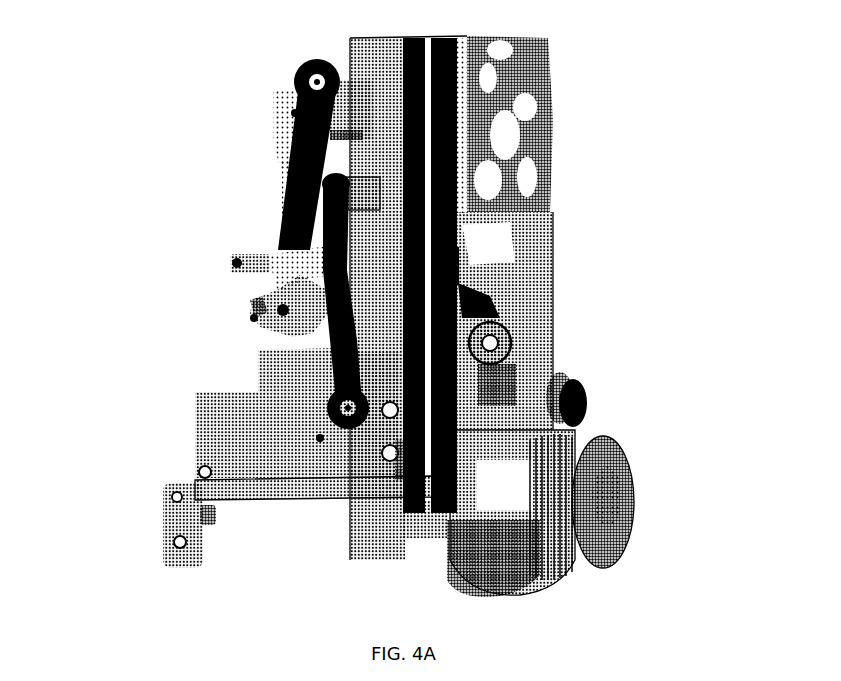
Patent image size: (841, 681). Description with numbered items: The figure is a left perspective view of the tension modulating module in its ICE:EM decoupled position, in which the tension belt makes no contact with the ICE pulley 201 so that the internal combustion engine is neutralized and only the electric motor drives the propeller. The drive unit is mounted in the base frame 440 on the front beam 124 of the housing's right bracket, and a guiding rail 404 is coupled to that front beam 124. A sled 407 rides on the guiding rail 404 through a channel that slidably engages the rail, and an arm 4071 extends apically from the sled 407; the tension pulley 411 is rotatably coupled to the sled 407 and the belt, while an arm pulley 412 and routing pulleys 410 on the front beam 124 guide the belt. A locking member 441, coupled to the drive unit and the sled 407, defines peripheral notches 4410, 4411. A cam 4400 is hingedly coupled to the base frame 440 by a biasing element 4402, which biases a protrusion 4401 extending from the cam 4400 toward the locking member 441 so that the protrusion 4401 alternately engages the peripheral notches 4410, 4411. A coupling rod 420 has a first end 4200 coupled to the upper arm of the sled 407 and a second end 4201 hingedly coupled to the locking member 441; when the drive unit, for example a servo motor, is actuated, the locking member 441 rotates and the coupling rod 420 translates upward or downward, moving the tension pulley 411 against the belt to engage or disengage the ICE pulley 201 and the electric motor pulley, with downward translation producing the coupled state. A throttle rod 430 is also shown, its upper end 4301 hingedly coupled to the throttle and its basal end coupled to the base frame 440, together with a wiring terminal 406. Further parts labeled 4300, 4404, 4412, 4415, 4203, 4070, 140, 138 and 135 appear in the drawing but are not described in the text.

The arm 4071 is at (378, 192).
The pivot cylinder 4300 is at (343, 72).
The upper end of throttle rod 4301 is at (298, 83).
The throttle rod 430 is at (290, 178).
The first end of coupling rod 4200 is at (290, 190).
The coupling rod 420 is at (287, 215).
The locking member 441 is at (330, 397).
The base frame 440 is at (268, 255).
The protrusion 4401 is at (245, 262).
The biasing element 4402 is at (257, 310).
The bracket hole 4404 is at (250, 318).
The cam 4400 is at (262, 325).
The peripheral notch 4410 is at (270, 360).
The peripheral notch 4411 is at (298, 383).
The second end of coupling rod 4201 is at (337, 385).
The wiring terminal 406 is at (198, 440).
The horizontal bar 4412 is at (198, 462).
The mounting bracket 4415 is at (188, 495).
The pin 4203 is at (318, 445).
The sled 407 is at (397, 458).
The guiding rail 404 is at (410, 535).
The front beam 124 is at (447, 548).
The motor body 140 is at (532, 590).
The ICE pulley 201 is at (622, 458).
The routing pulleys 410 is at (580, 390).
The support 4070 is at (503, 388).
The tension pulley 411 is at (500, 343).
The arm pulley 412 is at (477, 293).
The wheel block 138 is at (537, 60).
The wheel openings 135 is at (510, 133).